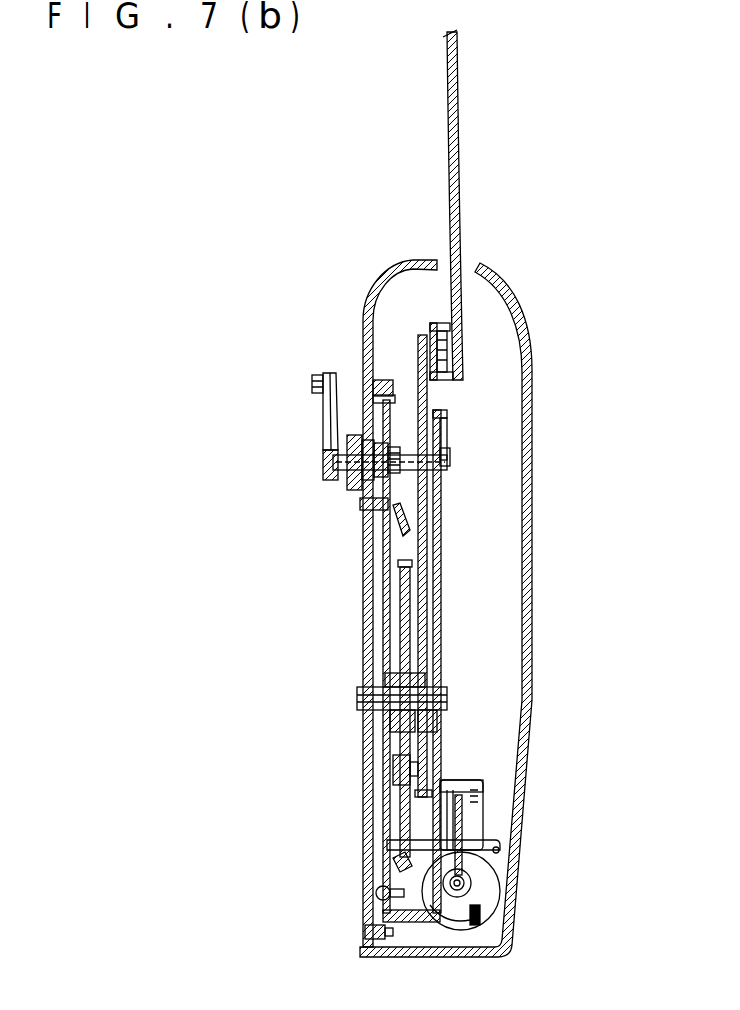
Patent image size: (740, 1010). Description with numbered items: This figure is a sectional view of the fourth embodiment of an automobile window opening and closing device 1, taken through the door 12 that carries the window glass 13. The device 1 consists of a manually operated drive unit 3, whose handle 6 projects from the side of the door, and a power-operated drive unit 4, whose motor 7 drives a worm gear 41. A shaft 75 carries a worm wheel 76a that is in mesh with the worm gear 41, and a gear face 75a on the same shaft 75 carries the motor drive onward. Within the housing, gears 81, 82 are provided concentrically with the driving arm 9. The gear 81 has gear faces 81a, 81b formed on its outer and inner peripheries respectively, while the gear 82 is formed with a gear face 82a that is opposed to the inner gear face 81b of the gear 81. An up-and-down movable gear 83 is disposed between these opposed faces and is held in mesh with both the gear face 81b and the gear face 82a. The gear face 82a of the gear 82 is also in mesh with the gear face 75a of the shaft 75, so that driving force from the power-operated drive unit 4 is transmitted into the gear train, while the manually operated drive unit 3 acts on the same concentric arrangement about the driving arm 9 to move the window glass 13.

The window opening and closing device 1 is at (463, 675).
The manually operated drive unit 3 is at (348, 493).
The power-operated drive unit 4 is at (492, 828).
The handle lever 6 is at (322, 422).
The motor 7 is at (495, 893).
The driving arm 9 is at (428, 571).
The door 12 is at (518, 843).
The window glass 13 is at (463, 155).
The worm gear 41 is at (457, 875).
The shaft 75 is at (413, 848).
The gear face 75a is at (405, 860).
The worm wheel 76a is at (483, 780).
The gear 81 is at (387, 560).
The gear face 81a is at (366, 905).
The gear face 81b is at (403, 537).
The gear 82 is at (440, 618).
The gear face 82a is at (400, 573).
The up-and-down movable gear 83 is at (397, 770).